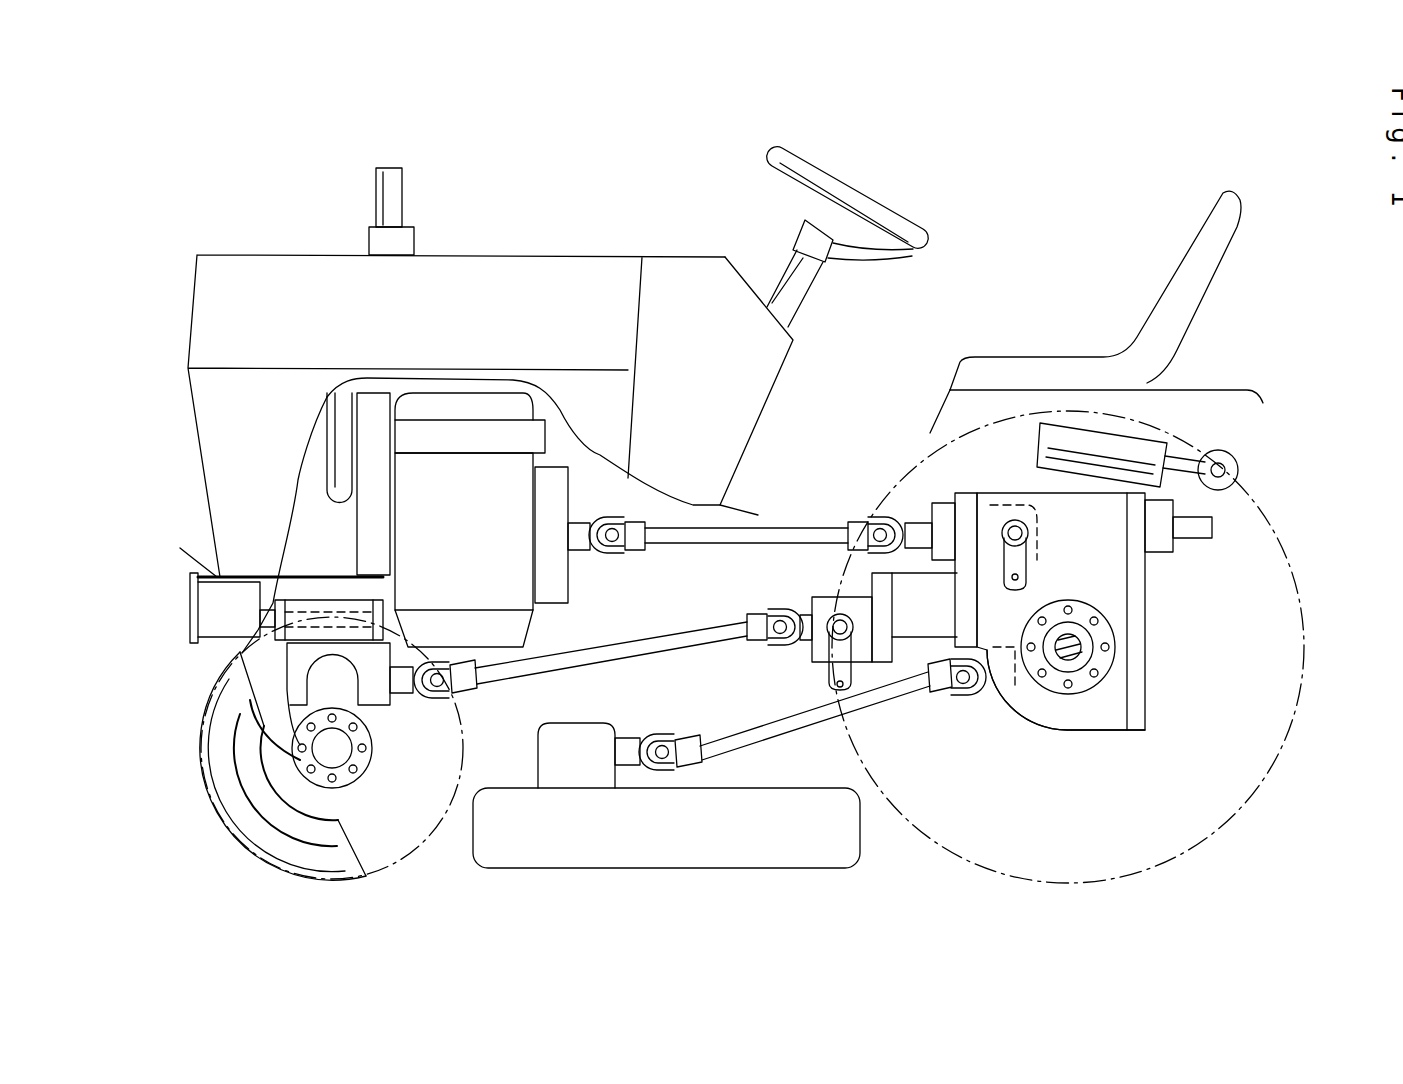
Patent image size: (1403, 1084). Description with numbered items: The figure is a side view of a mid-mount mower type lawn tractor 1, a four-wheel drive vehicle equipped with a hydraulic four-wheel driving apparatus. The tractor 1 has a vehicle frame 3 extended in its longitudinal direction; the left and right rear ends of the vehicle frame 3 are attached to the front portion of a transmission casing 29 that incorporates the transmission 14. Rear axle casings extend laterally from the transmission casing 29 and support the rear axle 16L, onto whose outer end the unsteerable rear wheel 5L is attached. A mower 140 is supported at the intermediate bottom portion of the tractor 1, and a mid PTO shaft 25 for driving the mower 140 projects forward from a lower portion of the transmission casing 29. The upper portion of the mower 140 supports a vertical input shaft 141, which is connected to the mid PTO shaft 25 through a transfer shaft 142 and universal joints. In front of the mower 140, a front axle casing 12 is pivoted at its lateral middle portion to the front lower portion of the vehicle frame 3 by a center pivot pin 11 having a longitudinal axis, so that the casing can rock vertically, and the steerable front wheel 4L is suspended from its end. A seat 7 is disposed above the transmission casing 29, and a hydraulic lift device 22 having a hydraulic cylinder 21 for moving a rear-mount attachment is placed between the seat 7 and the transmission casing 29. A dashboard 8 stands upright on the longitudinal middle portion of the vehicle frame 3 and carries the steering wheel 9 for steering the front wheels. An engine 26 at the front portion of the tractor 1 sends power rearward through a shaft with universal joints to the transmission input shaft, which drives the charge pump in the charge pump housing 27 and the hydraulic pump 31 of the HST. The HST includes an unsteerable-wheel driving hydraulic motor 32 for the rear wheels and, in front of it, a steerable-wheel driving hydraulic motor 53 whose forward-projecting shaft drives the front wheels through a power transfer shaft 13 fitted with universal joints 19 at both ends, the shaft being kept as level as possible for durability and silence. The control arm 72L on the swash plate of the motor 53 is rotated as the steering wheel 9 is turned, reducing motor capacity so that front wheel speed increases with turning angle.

The lawn tractor 1 is at (222, 147).
The vehicle frame 3 is at (200, 576).
The front wheel 4L is at (230, 838).
The rear wheel 5L is at (1225, 830).
The seat 7 is at (1160, 280).
The dashboard 8 is at (747, 450).
The steering wheel 9 is at (897, 212).
The center pivot pin 11 is at (270, 625).
The front axle casing 12 is at (240, 702).
The power transfer shaft 13 is at (645, 640).
The transmission 14 is at (1037, 732).
The rear axle 16L is at (1090, 637).
The universal joints 19 is at (782, 650).
The hydraulic cylinder 21 is at (1243, 465).
The hydraulic lift device 22 is at (1170, 432).
The mid PTO shaft 25 is at (988, 700).
The engine 26 is at (545, 615).
The charge pump housing 27 is at (936, 496).
The transmission casing 29 is at (1130, 735).
The hydraulic pump 31 is at (992, 518).
The unsteerable-wheel driving hydraulic motor 32 is at (912, 652).
The steerable-wheel driving hydraulic motor 53 is at (810, 592).
The control arm 72L is at (835, 692).
The mower 140 is at (690, 872).
The input shaft 141 is at (625, 737).
The transfer shaft 142 is at (762, 735).